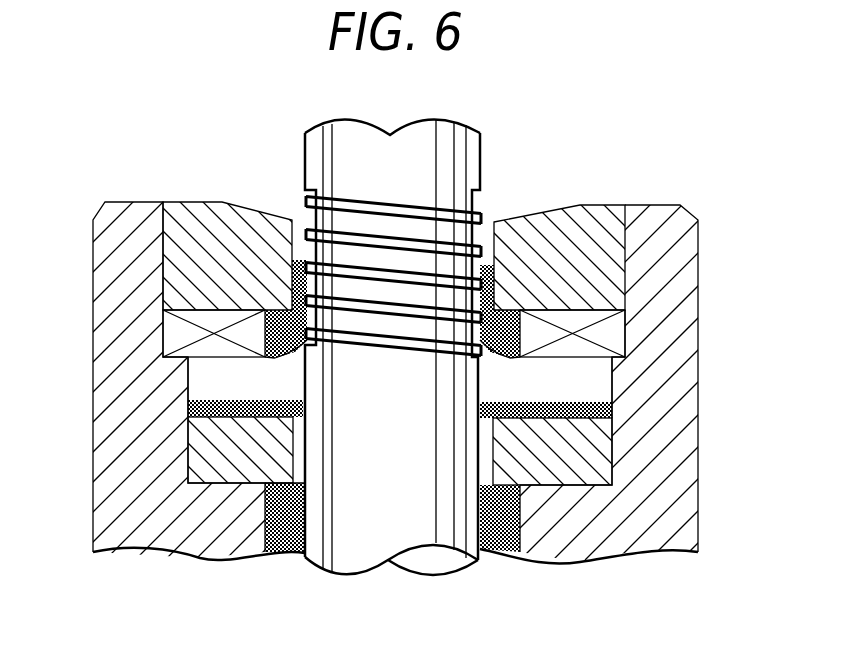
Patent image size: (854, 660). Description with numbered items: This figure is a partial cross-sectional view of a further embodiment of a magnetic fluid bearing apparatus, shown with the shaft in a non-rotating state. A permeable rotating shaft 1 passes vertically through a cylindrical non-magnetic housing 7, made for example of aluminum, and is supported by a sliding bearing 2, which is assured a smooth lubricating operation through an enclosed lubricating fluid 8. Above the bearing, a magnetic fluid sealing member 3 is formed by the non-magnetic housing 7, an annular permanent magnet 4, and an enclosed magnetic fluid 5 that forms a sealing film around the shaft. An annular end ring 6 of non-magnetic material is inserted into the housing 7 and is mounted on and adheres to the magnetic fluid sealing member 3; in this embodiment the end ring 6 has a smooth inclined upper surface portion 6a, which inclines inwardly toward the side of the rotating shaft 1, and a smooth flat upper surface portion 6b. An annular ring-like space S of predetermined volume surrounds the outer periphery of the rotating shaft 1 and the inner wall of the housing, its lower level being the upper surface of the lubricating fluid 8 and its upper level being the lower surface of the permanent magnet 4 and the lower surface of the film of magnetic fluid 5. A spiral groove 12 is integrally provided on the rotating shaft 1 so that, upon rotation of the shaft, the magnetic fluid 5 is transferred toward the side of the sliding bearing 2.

The rotating shaft 1 is at (483, 172).
The sliding bearing 2 is at (203, 445).
The magnetic fluid sealing member 3 is at (235, 362).
The permanent magnet 4 is at (613, 333).
The magnetic fluid 5 is at (235, 338).
The end ring 6 is at (187, 222).
The inclined upper surface portion 6a is at (542, 210).
The flat upper surface portion 6b is at (600, 205).
The housing 7 is at (120, 300).
The lubricating fluid 8 is at (284, 553).
The spiral groove 12 is at (300, 210).
The space S is at (613, 385).